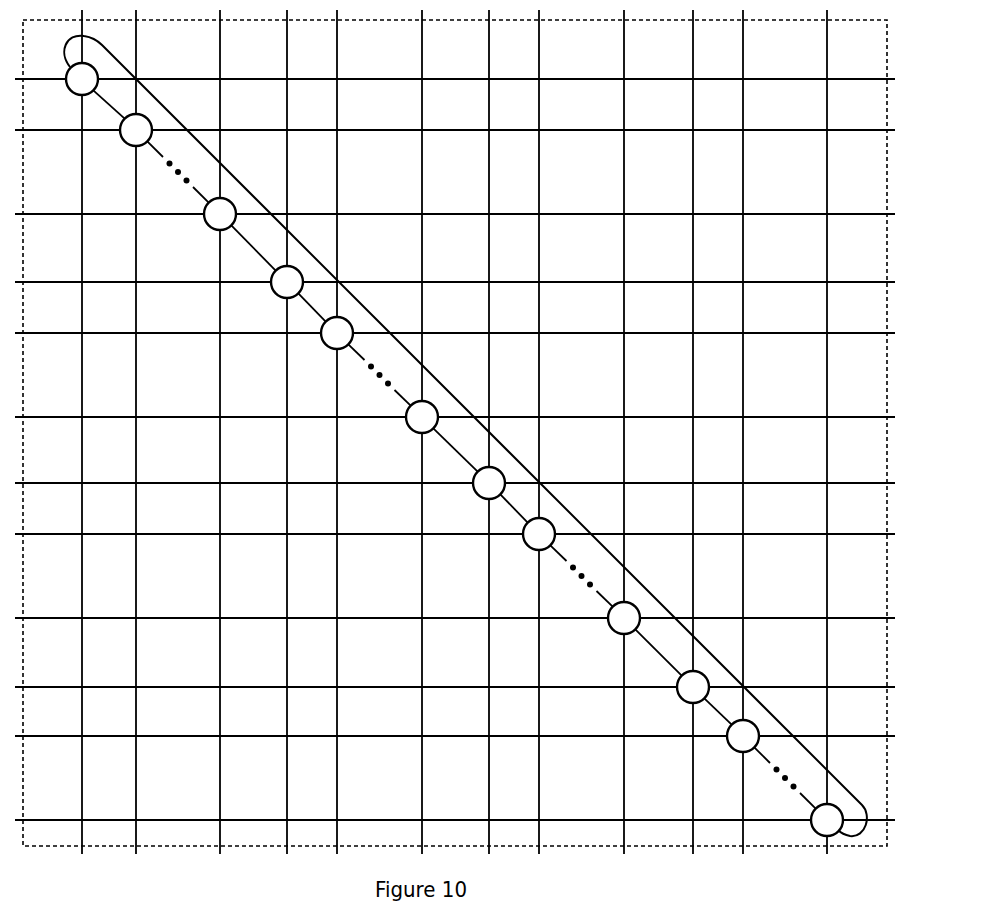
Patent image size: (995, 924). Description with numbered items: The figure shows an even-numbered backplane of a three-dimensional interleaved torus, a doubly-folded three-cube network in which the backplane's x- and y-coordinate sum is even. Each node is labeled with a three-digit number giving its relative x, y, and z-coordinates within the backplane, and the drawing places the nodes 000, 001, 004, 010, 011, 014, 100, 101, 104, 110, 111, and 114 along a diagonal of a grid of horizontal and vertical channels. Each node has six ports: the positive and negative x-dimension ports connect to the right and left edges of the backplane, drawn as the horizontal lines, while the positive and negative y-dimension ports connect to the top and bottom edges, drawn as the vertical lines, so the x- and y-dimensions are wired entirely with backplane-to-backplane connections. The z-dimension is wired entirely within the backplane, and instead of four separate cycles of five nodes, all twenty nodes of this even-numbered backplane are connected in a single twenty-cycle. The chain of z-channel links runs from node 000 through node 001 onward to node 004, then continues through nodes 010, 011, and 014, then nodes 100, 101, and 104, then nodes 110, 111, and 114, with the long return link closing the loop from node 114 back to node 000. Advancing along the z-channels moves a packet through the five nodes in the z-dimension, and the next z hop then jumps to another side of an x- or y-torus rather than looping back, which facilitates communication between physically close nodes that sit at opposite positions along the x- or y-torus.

The node 000 is at (82, 79).
The node 001 is at (136, 130).
The node 004 is at (220, 214).
The node 010 is at (287, 282).
The node 011 is at (337, 333).
The node 014 is at (422, 417).
The node 100 is at (489, 483).
The node 101 is at (539, 534).
The node 104 is at (624, 618).
The node 110 is at (693, 687).
The node 111 is at (743, 736).
The node 114 is at (827, 820).